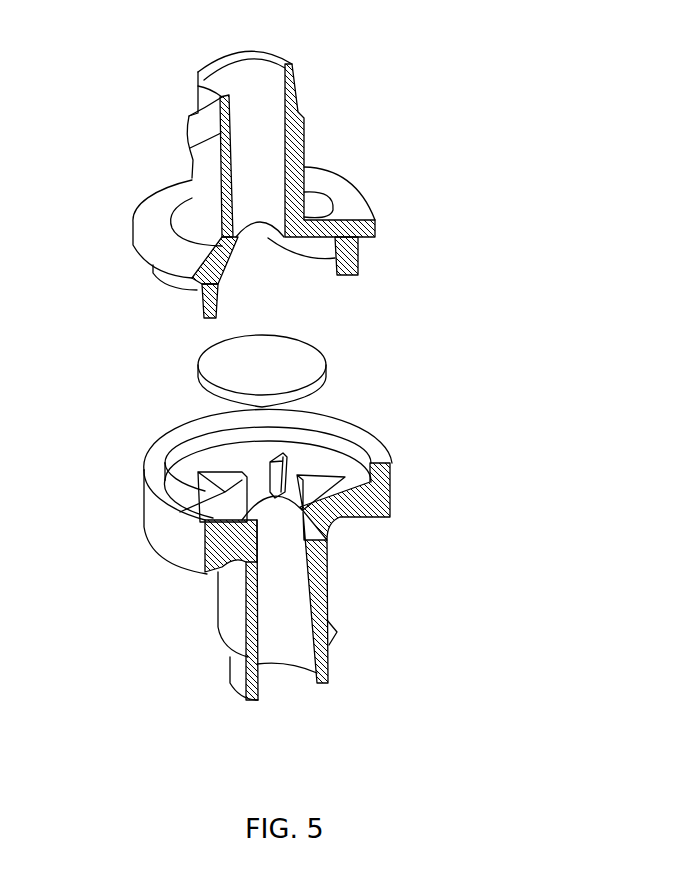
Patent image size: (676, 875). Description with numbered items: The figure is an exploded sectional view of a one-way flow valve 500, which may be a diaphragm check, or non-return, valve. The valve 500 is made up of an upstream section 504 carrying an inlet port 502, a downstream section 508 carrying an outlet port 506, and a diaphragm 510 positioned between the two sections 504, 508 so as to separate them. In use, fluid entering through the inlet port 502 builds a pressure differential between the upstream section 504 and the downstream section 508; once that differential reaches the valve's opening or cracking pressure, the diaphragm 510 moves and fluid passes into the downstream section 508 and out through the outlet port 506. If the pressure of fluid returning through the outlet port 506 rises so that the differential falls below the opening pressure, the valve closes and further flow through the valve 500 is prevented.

The one-way flow valve 500 is at (485, 188).
The inlet port 502 is at (240, 77).
The upstream section 504 is at (190, 137).
The outlet port 506 is at (288, 687).
The downstream section 508 is at (148, 527).
The diaphragm 510 is at (198, 380).